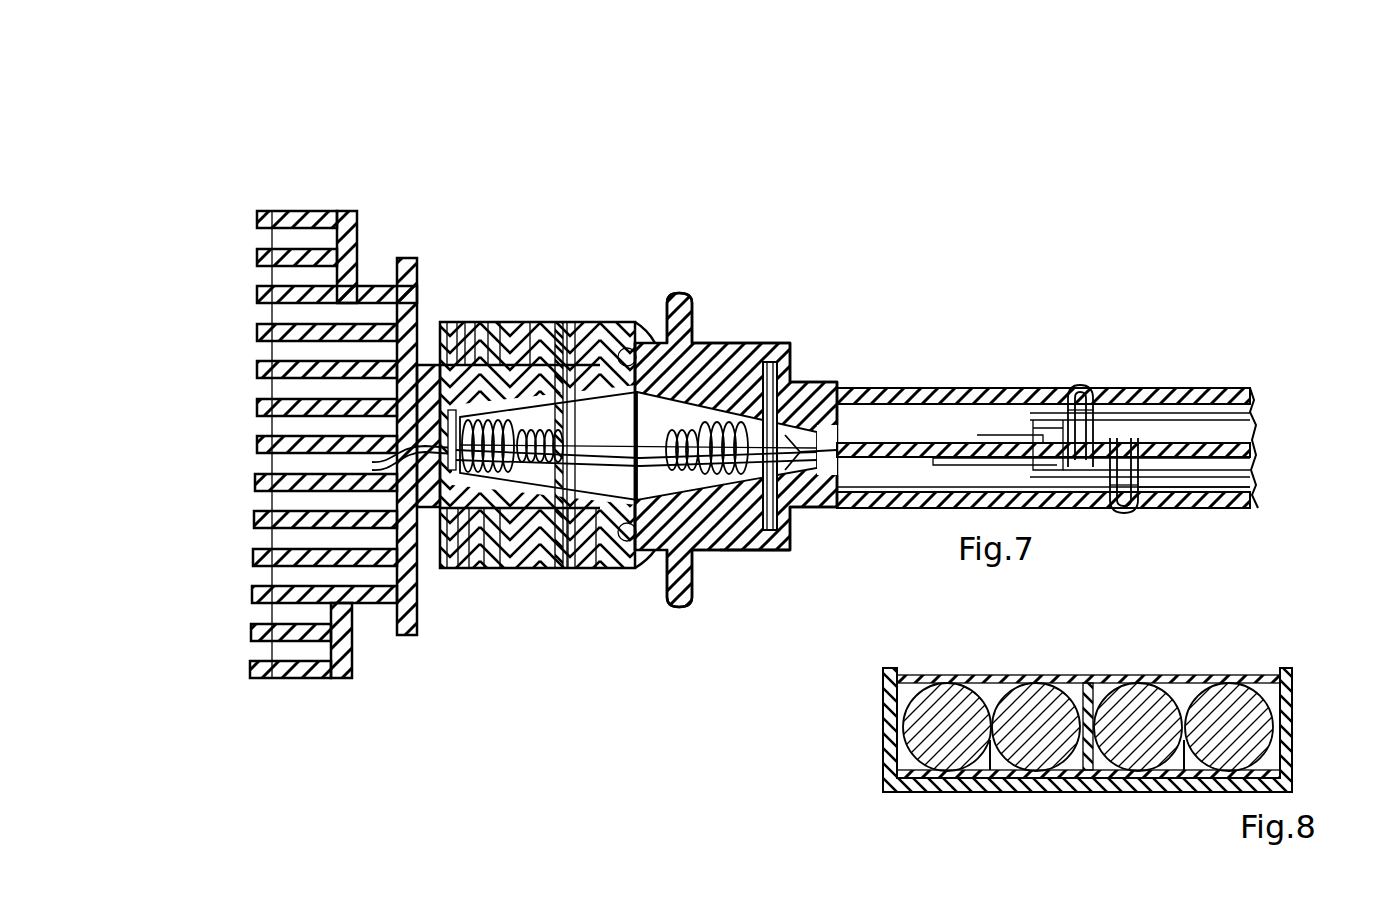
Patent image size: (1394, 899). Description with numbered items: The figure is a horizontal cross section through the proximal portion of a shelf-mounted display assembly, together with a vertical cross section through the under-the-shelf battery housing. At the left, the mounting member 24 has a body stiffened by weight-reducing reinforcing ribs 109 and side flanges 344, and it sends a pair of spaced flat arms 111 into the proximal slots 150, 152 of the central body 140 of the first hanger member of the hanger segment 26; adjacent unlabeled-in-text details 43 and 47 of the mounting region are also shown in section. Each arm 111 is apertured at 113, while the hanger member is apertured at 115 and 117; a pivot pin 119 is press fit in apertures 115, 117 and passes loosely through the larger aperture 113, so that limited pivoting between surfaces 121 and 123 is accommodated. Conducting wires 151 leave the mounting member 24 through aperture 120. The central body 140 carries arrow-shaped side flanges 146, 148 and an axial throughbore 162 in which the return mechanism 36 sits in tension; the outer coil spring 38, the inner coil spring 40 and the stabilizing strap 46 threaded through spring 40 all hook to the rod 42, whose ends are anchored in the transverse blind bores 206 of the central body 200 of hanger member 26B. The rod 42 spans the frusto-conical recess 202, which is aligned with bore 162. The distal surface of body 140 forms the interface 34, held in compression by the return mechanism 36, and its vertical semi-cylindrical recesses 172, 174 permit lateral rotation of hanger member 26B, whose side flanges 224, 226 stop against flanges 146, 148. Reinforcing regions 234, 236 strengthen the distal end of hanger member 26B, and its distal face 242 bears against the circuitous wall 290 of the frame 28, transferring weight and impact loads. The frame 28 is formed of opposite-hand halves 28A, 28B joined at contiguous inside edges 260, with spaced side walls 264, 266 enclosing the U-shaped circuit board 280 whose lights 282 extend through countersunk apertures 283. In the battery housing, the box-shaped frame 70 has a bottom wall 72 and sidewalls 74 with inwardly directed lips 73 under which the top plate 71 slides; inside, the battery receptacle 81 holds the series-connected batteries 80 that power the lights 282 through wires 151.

In FIG. 7, the mounting member 24 is at (362, 252).
In FIG. 7, the hanger segment 26 is at (738, 333).
In FIG. 7, the hanger member 26B is at (776, 350).
In FIG. 7, the frame segment 28 is at (1249, 395).
In FIG. 7, the frame half 28A is at (1103, 395).
In FIG. 7, the frame half 28B is at (1236, 512).
In FIG. 7, the interface surface 34 is at (650, 436).
In FIG. 7, the return mechanism 36 is at (762, 345).
In FIG. 7, the outer coil spring 38 is at (465, 322).
In FIG. 7, the inner coil spring 40 is at (488, 322).
In FIG. 7, the rod 42 is at (786, 555).
In FIG. 7, the layer 43 is at (445, 322).
In FIG. 7, the stabilizing strap 46 is at (500, 322).
In FIG. 7, the insulator cone 47 is at (612, 345).
In FIG. 8, the box-shaped frame 70 is at (1298, 690).
In FIG. 8, the top plate 71 is at (1020, 672).
In FIG. 8, the bottom wall 72 is at (1092, 792).
In FIG. 8, the inwardly directed lips 73 is at (907, 668).
In FIG. 8, the sidewalls 74 is at (886, 735).
In FIG. 8, the batteries 80 is at (954, 782).
In FIG. 8, the battery receptacle 81 is at (1270, 775).
In FIG. 7, the reinforcing ribs 109 is at (262, 219).
In FIG. 7, the arms 111 is at (455, 322).
In FIG. 7, the aperture 113 is at (562, 322).
In FIG. 7, the aperture 115 is at (588, 314).
In FIG. 7, the aperture 117 is at (596, 570).
In FIG. 7, the pivot pin 119 is at (530, 322).
In FIG. 7, the aperture 120 is at (440, 432).
In FIG. 7, the surface 121 is at (369, 228).
In FIG. 7, the surface 123 is at (445, 570).
In FIG. 7, the central main body portion 140 is at (643, 345).
In FIG. 7, the side flange 146 is at (500, 570).
In FIG. 7, the side flange 148 is at (546, 322).
In FIG. 7, the proximal slot 150 is at (485, 570).
In FIG. 7, the conducting wires 151 is at (740, 400).
In FIG. 7, the proximal slot 152 is at (475, 322).
In FIG. 7, the throughbore 162 is at (470, 570).
In FIG. 7, the semi-cylindrical recess 172 is at (620, 560).
In FIG. 7, the semi-cylindrical recess 174 is at (652, 352).
In FIG. 7, the central body 200 is at (760, 555).
In FIG. 7, the frusto-conical recess 202 is at (645, 577).
In FIG. 7, the blind bores 206 is at (822, 400).
In FIG. 7, the side flange 224 is at (685, 607).
In FIG. 7, the side flange 226 is at (709, 315).
In FIG. 7, the reinforcing region 234 is at (710, 555).
In FIG. 7, the reinforcing region 236 is at (790, 380).
In FIG. 7, the distal face 242 is at (836, 400).
In FIG. 7, the inside edges 260 is at (849, 387).
In FIG. 7, the side wall 264 is at (606, 340).
In FIG. 7, the side wall 266 is at (858, 402).
In FIG. 7, the U-shaped circuit board 280 is at (1253, 400).
In FIG. 7, the lights 282 is at (1080, 385).
In FIG. 7, the countersunk aperture 283 is at (1092, 395).
In FIG. 7, the circuitous wall 290 is at (832, 510).
In FIG. 7, the side flanges 344 is at (434, 322).